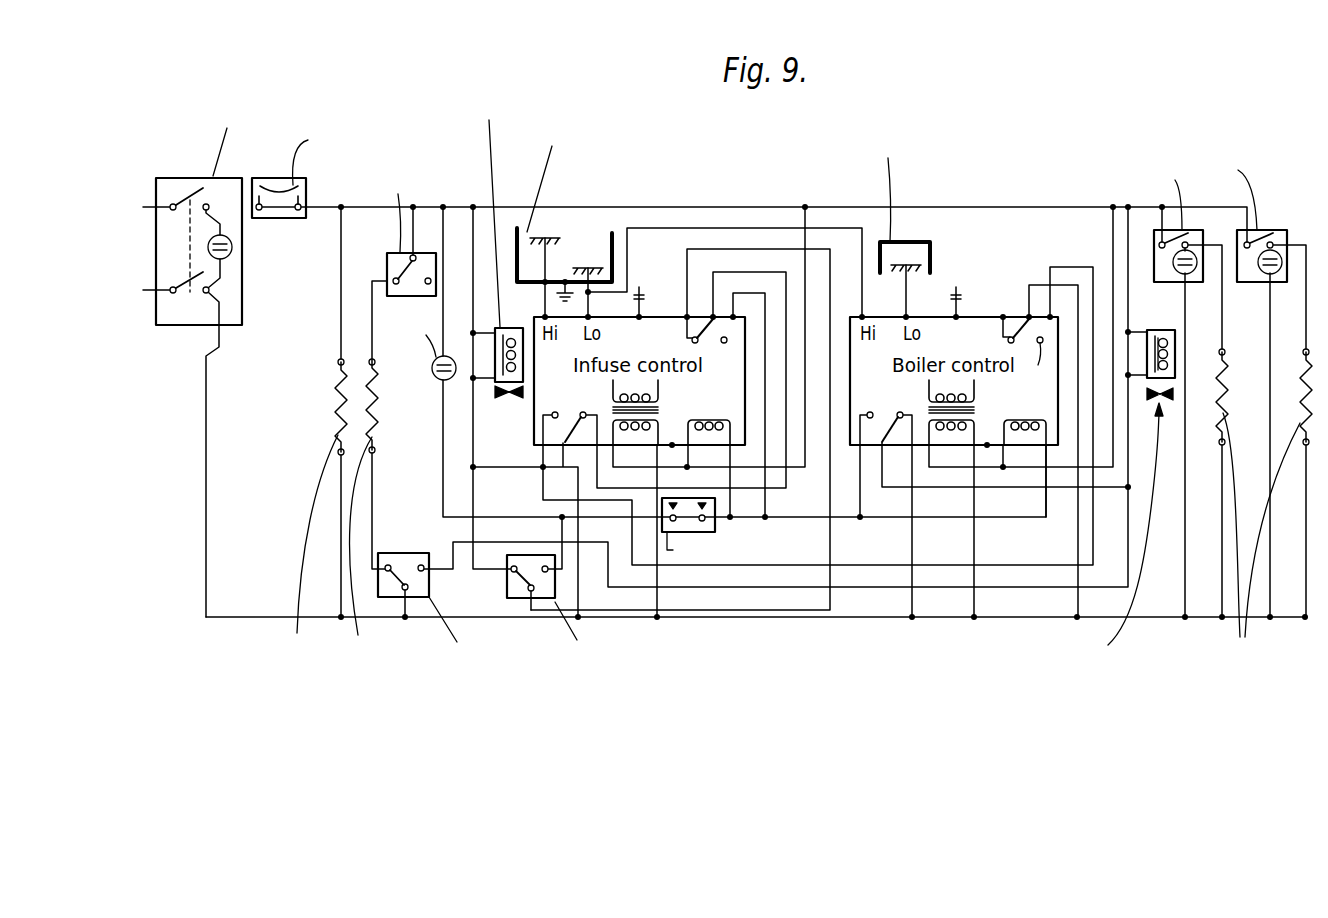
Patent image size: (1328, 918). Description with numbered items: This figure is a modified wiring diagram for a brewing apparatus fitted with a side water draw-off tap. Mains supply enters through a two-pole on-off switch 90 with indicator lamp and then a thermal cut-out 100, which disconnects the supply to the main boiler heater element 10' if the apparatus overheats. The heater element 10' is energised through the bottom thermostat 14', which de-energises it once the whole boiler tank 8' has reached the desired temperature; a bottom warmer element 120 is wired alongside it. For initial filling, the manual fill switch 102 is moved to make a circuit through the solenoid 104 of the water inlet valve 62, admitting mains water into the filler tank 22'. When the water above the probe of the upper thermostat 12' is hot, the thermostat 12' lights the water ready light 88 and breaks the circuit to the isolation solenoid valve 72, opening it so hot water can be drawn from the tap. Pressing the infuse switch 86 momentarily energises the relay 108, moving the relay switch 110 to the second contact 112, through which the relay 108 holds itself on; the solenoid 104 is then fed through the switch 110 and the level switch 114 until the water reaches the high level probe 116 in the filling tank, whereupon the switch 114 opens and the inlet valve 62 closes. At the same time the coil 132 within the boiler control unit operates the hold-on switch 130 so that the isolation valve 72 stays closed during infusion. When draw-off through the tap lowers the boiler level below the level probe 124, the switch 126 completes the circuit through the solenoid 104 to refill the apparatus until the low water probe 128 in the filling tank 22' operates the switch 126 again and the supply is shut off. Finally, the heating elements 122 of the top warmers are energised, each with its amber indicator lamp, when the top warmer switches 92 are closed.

The two-pole on-off switch 90 is at (188, 177).
The thermal cut-out 100 is at (283, 220).
The bottom thermostat 14' is at (400, 226).
The bottom warmer element 120 is at (341, 390).
The main boiler heater element 10' is at (387, 531).
The water ready light 88 is at (437, 378).
The manual fill switch 102 is at (405, 558).
The upper thermostat 12' is at (581, 629).
The isolation solenoid valve 72 is at (513, 328).
The filler tank 22' is at (607, 206).
The high level probe 116 is at (545, 238).
The low water probe 128 is at (588, 267).
The relay switch 110 is at (690, 340).
The second contact 112 is at (724, 344).
The relay 108 is at (710, 419).
The level switch 114 is at (556, 412).
The infuse switch 86 is at (720, 528).
The boiler tank 8' is at (922, 202).
The level probe 124 is at (908, 271).
The hold-on switch 130 is at (1008, 340).
The coil 132 is at (1027, 419).
The switch 126 is at (885, 405).
The switches 92 is at (1155, 247).
The water inlet solenoid valve 62 is at (1168, 330).
The solenoid 104 is at (1168, 350).
The heating elements 122 is at (1302, 370).